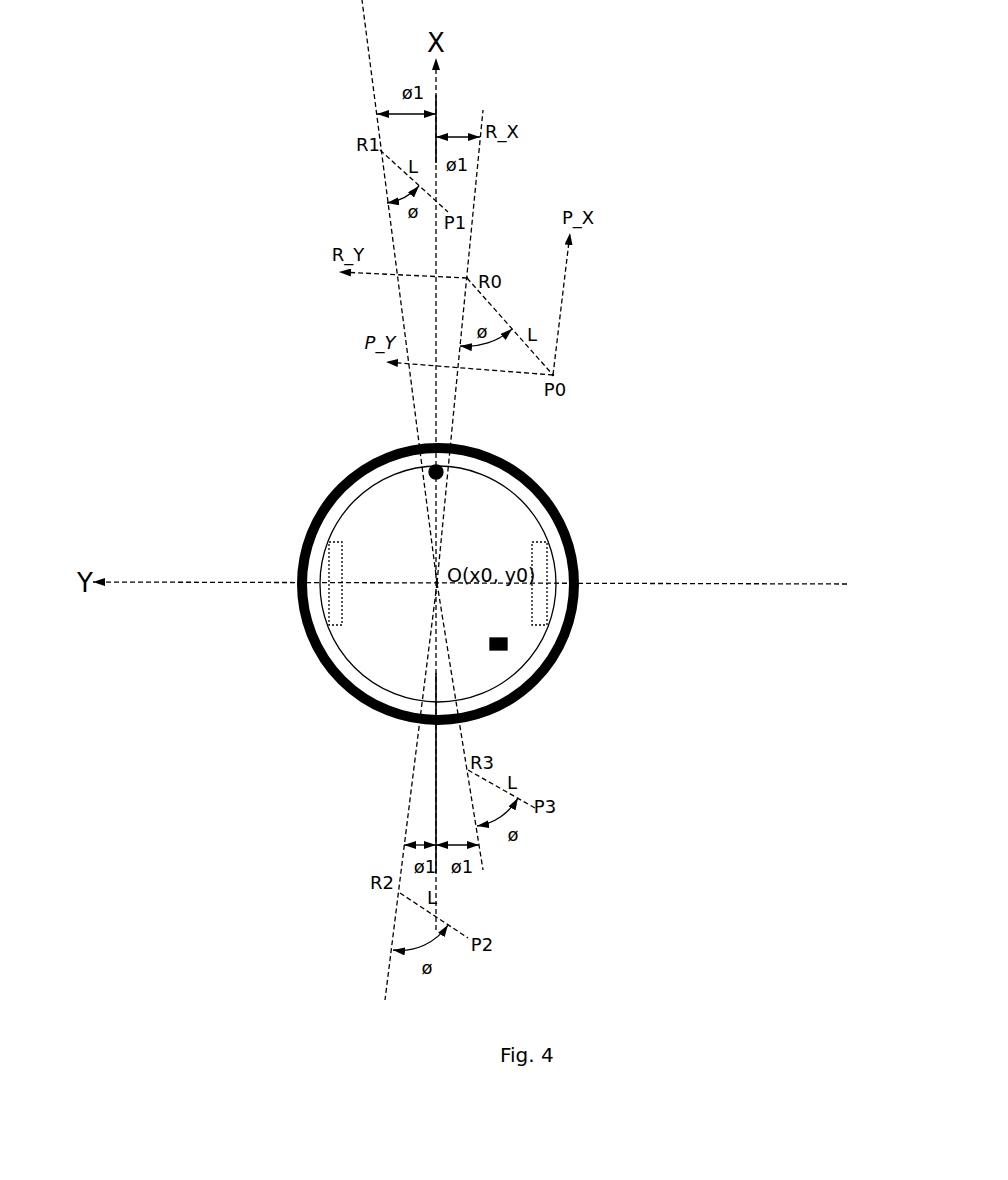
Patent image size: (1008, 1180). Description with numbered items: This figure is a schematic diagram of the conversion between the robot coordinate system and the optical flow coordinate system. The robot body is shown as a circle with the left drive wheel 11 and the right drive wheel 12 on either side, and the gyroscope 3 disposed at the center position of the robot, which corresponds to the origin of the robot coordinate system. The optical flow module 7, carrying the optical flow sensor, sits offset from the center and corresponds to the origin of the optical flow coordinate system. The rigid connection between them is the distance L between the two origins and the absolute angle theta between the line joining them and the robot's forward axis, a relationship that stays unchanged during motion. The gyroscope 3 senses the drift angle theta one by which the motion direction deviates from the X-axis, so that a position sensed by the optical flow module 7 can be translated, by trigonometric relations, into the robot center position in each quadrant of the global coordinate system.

The gyroscope 3 is at (467, 278).
The optical flow module 7 is at (553, 375).
The left drive wheel 11 is at (332, 542).
The right drive wheel 12 is at (538, 542).